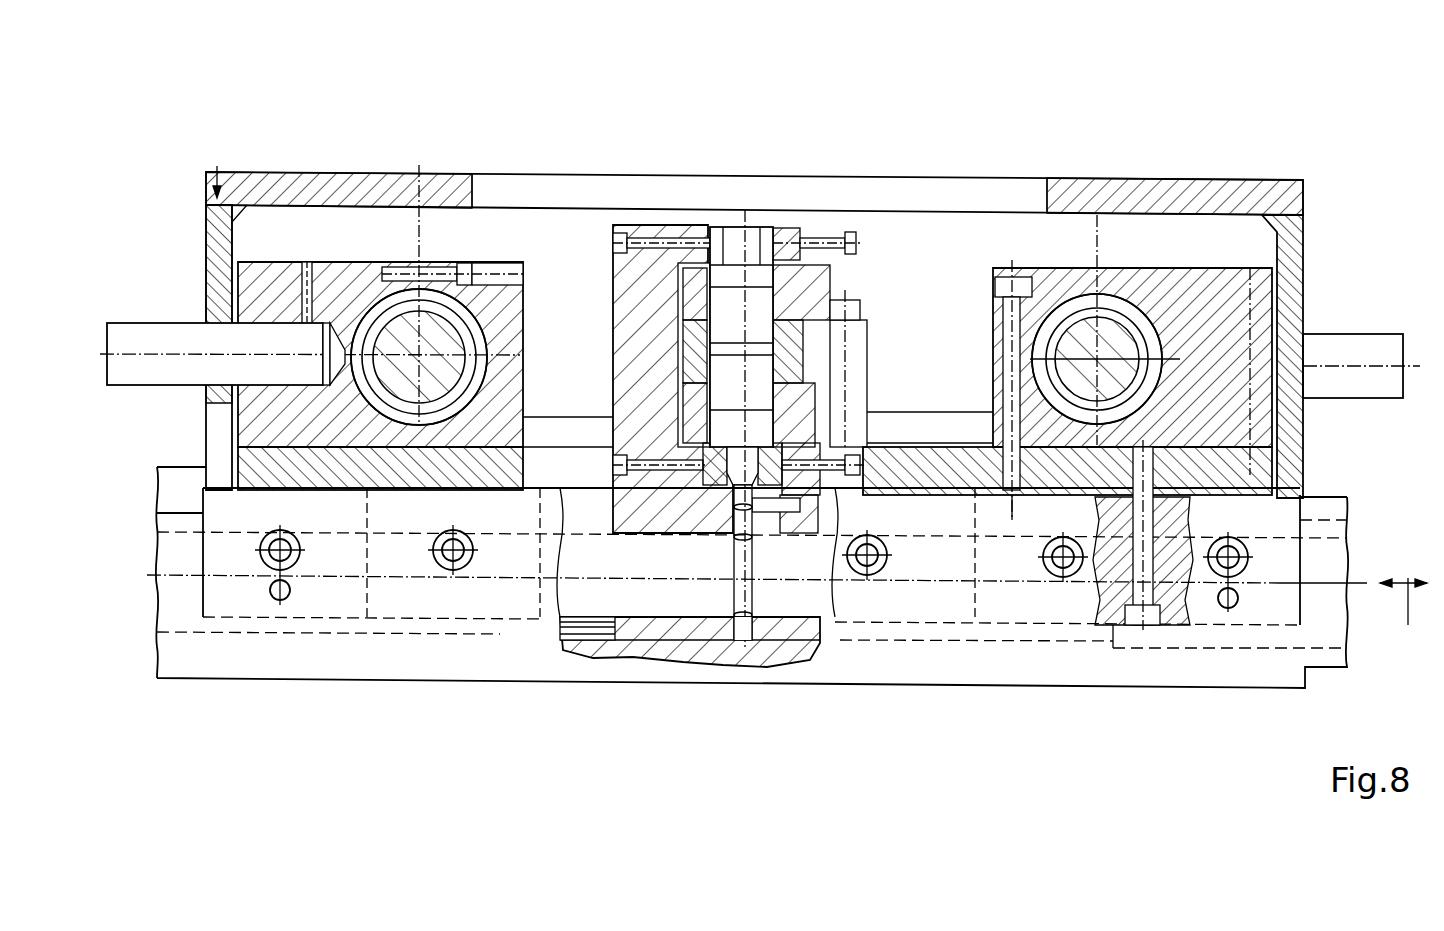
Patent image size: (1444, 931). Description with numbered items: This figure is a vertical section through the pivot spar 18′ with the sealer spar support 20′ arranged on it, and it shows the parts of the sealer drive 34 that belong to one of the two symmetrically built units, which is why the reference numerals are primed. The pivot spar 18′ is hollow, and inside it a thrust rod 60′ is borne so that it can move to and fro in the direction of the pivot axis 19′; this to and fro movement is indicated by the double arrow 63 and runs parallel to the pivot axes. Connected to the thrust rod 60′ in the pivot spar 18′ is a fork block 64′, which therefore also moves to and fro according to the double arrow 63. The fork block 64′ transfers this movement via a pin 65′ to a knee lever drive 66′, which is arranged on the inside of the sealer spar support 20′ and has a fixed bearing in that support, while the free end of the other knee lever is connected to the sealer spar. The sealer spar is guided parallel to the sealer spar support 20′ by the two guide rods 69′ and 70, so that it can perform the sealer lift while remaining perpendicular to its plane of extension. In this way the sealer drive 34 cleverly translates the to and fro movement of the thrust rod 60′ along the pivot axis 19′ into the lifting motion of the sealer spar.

The sealer drive 34 is at (580, 118).
The guide rod 69′ is at (398, 338).
The fork block 64′ is at (637, 288).
The pin 65′ is at (748, 327).
The knee lever drive 66′ is at (798, 430).
The guide rod 70 is at (1080, 335).
The sealer spar support 20′ is at (1187, 197).
The thrust rod 60′ is at (697, 605).
The pivot spar 18′ is at (963, 667).
The pivot axis 19′ is at (1285, 583).
The double arrow 63 is at (1403, 617).